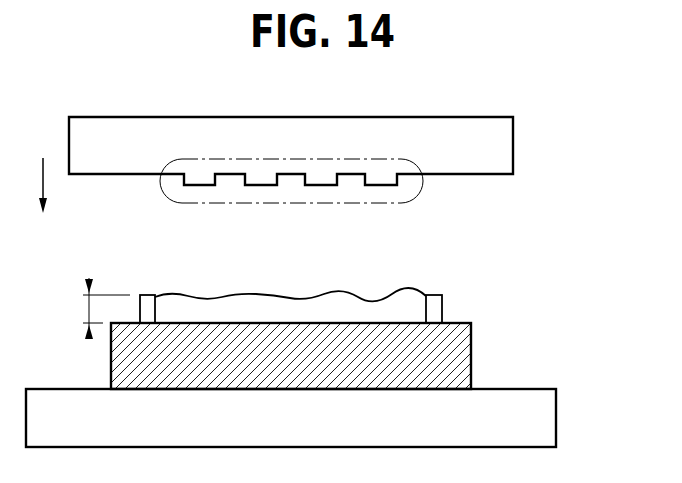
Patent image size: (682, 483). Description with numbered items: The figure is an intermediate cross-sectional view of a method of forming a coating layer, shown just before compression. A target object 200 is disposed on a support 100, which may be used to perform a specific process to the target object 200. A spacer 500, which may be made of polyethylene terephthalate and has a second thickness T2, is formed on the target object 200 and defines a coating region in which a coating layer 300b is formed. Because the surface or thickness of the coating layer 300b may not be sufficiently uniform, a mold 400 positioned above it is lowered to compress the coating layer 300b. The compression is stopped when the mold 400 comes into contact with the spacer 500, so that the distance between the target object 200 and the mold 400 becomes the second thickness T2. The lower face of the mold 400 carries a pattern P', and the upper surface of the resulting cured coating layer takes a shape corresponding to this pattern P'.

The support 100 is at (548, 421).
The target object 200 is at (462, 358).
The coating layer 300b is at (298, 302).
The mold 400 is at (505, 147).
The spacer 500 is at (434, 300).
The second thickness T2 is at (92, 308).
The pattern P' is at (295, 114).